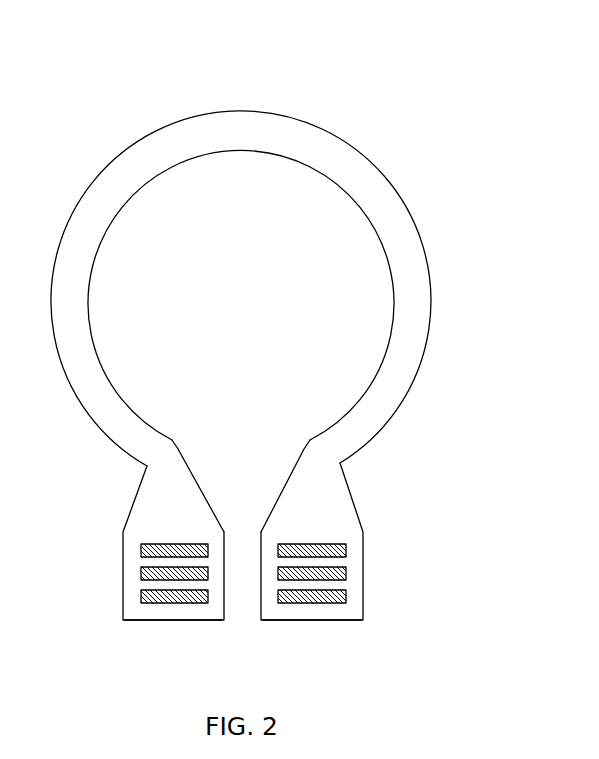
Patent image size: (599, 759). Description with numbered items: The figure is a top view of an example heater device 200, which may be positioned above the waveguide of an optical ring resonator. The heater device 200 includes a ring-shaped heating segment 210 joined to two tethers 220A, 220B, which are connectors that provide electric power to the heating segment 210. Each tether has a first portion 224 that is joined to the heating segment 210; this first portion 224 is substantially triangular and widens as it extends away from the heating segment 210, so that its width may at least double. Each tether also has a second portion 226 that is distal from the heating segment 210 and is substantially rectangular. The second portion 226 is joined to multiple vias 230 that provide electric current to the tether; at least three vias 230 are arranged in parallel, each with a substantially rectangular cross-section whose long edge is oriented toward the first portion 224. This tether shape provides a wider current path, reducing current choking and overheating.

The heater device 200 is at (505, 35).
The ring-shaped heating segment 210 is at (442, 112).
The tether 220A is at (107, 462).
The tether 220B is at (378, 456).
The first portion 224 is at (313, 470).
The second portion 226 is at (133, 613).
The vias 230 is at (278, 597).